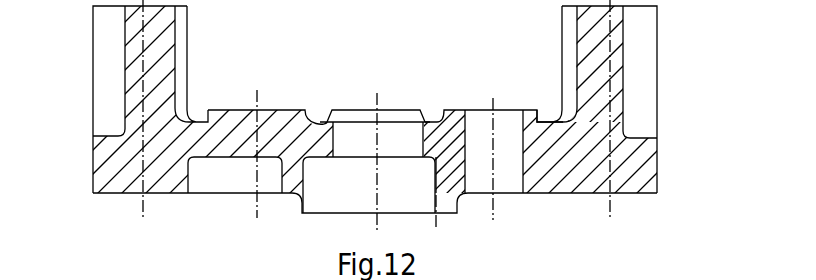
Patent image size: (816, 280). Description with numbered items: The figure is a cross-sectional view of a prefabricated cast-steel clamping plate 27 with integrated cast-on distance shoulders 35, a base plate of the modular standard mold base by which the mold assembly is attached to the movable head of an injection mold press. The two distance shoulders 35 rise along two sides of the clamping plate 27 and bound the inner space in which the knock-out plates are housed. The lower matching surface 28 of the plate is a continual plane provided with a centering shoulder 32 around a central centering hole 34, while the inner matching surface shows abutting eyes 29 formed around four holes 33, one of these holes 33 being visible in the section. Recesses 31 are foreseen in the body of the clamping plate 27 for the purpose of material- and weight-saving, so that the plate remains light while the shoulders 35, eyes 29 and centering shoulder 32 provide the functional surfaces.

The clamping plate 27 is at (660, 163).
The lower matching surface 28 is at (577, 197).
The abutting eyes 29 is at (530, 112).
The recesses 31 is at (100, 35).
The centering shoulder 32 is at (458, 196).
The holes 33 is at (485, 123).
The central centering hole 34 is at (362, 128).
The cast-on distance shoulders 35 is at (168, 40).